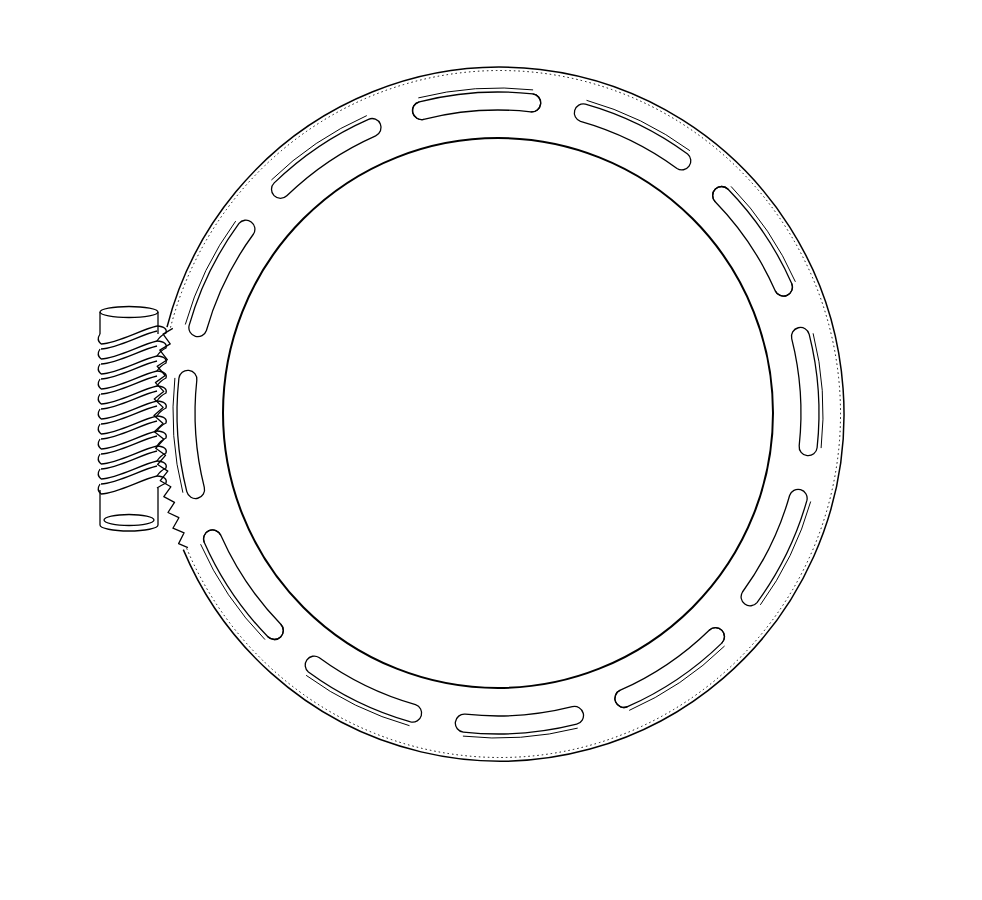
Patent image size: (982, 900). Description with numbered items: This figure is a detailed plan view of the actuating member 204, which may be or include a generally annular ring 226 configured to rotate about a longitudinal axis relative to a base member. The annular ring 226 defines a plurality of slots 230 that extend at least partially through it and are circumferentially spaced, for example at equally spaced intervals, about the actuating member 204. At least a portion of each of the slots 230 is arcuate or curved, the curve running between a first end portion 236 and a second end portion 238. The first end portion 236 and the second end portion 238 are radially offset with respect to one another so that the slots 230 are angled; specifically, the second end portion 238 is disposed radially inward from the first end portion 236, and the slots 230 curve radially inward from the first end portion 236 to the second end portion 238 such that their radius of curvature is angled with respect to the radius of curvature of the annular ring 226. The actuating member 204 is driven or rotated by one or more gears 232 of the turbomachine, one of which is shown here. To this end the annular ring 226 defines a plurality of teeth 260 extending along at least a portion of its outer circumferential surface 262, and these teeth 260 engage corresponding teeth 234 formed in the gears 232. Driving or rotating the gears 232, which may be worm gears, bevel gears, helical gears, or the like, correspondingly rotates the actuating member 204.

The actuating member 204 is at (210, 50).
The annular ring 226 is at (432, 139).
The slots 230 is at (476, 100).
The gears 232 is at (137, 305).
The teeth 234 is at (338, 112).
The first end portion 236 is at (418, 94).
The second end portion 238 is at (528, 94).
The teeth 260 is at (172, 528).
The outer circumferential surface 262 is at (237, 186).